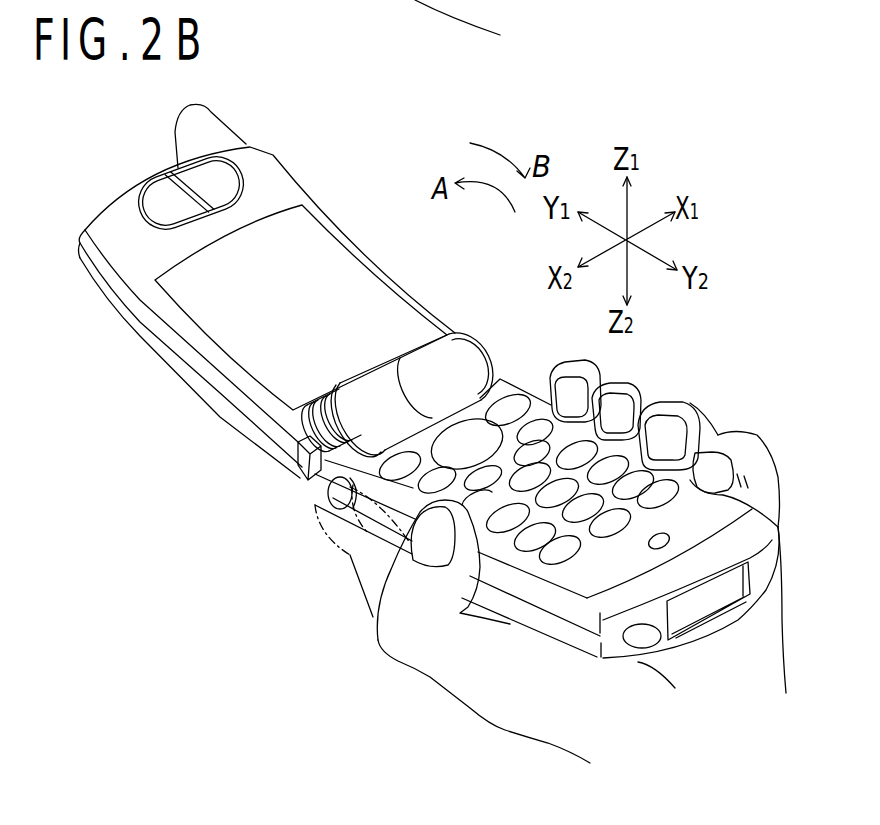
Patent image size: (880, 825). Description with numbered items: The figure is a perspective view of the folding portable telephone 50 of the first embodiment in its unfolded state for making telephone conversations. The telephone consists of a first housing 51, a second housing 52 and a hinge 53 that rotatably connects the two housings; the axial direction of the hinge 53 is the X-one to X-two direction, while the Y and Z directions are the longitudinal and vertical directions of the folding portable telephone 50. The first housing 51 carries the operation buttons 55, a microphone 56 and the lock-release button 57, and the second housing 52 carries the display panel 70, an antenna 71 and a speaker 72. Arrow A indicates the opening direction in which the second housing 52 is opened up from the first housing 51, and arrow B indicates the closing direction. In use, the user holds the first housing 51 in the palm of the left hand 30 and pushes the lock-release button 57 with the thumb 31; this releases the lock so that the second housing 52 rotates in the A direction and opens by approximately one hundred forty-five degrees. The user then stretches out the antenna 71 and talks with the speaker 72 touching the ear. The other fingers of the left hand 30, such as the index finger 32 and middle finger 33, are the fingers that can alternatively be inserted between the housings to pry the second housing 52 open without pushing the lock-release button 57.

The left hand 30 is at (545, 713).
The thumb 31 is at (403, 566).
The index finger 32 is at (567, 364).
The middle finger 33 is at (637, 392).
The folding portable telephone 50 is at (567, 113).
The first housing 51 is at (784, 516).
The second housing 52 is at (152, 368).
The hinge 53 is at (452, 336).
The operation buttons 55 is at (545, 449).
The microphone 56 is at (657, 533).
The lock-release button 57 is at (325, 508).
The display panel 70 is at (312, 240).
The antenna 71 is at (213, 125).
The speaker 72 is at (178, 167).